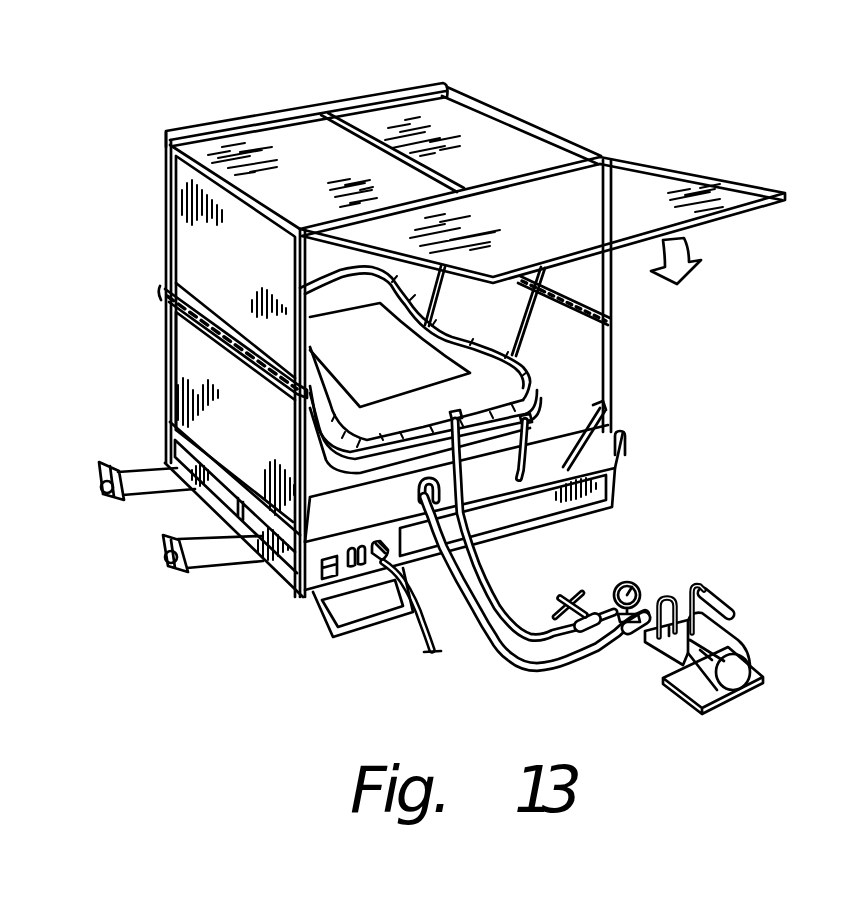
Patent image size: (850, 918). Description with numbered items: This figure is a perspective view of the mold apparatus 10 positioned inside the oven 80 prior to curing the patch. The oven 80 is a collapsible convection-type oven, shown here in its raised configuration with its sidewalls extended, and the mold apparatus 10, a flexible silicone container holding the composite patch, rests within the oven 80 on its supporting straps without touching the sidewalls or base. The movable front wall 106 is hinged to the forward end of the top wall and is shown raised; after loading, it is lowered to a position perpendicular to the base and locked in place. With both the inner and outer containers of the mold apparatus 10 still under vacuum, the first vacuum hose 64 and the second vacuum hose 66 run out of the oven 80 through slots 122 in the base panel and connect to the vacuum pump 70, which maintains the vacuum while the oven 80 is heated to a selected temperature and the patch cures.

The oven 80 is at (524, 76).
The front wall 106 is at (670, 188).
The mold apparatus 10 is at (532, 381).
The slots 122 is at (470, 513).
The second vacuum hose 66 is at (488, 607).
The first vacuum hose 64 is at (508, 666).
The vacuum pump 70 is at (750, 605).